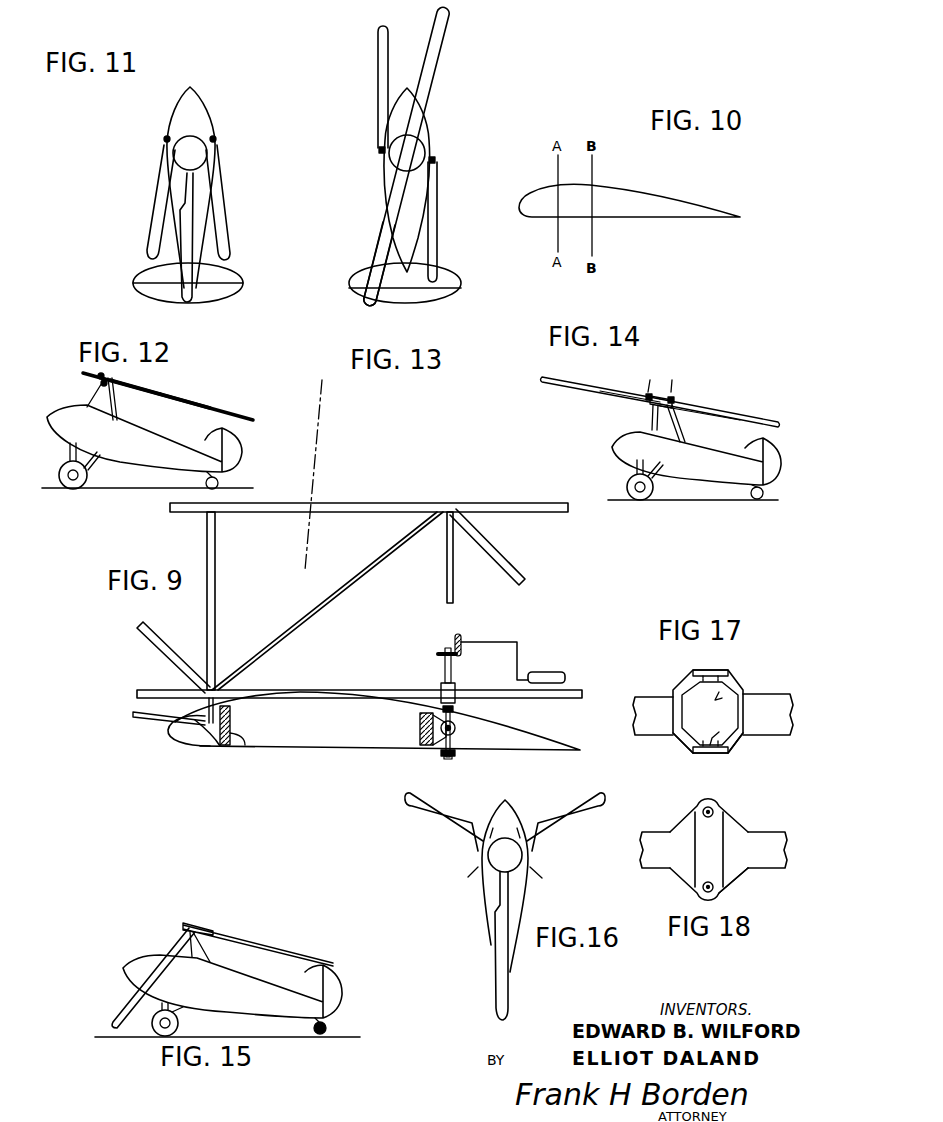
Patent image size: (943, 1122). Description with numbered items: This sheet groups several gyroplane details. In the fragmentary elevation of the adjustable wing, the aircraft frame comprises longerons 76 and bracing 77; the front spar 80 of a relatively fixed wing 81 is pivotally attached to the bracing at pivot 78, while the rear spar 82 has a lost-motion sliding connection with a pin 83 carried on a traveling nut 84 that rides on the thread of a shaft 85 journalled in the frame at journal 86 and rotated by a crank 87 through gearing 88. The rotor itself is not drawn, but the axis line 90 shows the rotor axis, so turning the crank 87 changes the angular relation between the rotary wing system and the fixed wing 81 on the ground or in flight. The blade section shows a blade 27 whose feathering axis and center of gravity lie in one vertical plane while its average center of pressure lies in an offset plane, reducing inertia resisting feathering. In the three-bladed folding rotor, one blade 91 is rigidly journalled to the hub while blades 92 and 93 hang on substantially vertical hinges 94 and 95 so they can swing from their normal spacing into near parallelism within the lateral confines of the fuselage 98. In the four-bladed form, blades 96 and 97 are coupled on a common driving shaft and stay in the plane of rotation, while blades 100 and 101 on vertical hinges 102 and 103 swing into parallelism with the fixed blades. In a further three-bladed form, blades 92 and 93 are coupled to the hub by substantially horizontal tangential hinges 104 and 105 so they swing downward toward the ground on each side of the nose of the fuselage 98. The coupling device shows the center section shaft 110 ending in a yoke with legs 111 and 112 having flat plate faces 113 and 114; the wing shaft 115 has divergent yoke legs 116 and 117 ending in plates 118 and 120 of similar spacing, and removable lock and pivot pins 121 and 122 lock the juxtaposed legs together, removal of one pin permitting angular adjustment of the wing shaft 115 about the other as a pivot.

In FIG. 10, the blade 27 is at (615, 198).
In FIG. 9, the longerons 76 is at (374, 503).
In FIG. 9, the bracing 77 is at (215, 567).
In FIG. 9, the pivot 78 is at (221, 746).
In FIG. 9, the front spar 80 is at (245, 745).
In FIG. 9, the fixed wing 81 is at (183, 735).
In FIG. 9, the rear spar 82 is at (422, 740).
In FIG. 9, the pin 83 is at (456, 731).
In FIG. 9, the traveling nut 84 is at (458, 748).
In FIG. 9, the shaft 85 is at (456, 714).
In FIG. 9, the journal 86 is at (455, 692).
In FIG. 9, the crank 87 is at (545, 673).
In FIG. 9, the gearing 88 is at (455, 640).
In FIG. 9, the axis line 90 is at (316, 465).
In FIG. 11, the blade 91 is at (188, 302).
In FIG. 12, the blade 91 is at (238, 418).
In FIG. 15, the blade 91 is at (280, 950).
In FIG. 11, the blade 92 is at (152, 212).
In FIG. 12, the blade 92 is at (151, 391).
In FIG. 15, the blade 92 is at (130, 1003).
In FIG. 11, the blade 93 is at (224, 215).
In FIG. 12, the blade 93 is at (183, 402).
In FIG. 11, the vertical hinge 94 is at (165, 139).
In FIG. 12, the vertical hinge 94 is at (100, 374).
In FIG. 11, the vertical hinge 95 is at (215, 138).
In FIG. 12, the vertical hinge 95 is at (100, 385).
In FIG. 13, the blade 96 is at (383, 248).
In FIG. 14, the blade 96 is at (718, 408).
In FIG. 13, the blade 97 is at (435, 57).
In FIG. 14, the blade 97 is at (585, 390).
In FIG. 13, the fuselage 98 is at (423, 132).
In FIG. 12, the fuselage 98 is at (75, 428).
In FIG. 14, the fuselage 98 is at (637, 457).
In FIG. 16, the fuselage 98 is at (515, 907).
In FIG. 15, the fuselage 98 is at (235, 982).
In FIG. 13, the blade 100 is at (382, 72).
In FIG. 14, the blade 100 is at (632, 400).
In FIG. 13, the blade 101 is at (429, 232).
In FIG. 14, the blade 101 is at (738, 413).
In FIG. 13, the vertical hinge 102 is at (380, 150).
In FIG. 14, the vertical hinge 102 is at (646, 395).
In FIG. 13, the vertical hinge 103 is at (434, 159).
In FIG. 14, the vertical hinge 103 is at (671, 396).
In FIG. 16, the horizontal hinge 104 is at (478, 856).
In FIG. 16, the horizontal hinge 105 is at (540, 858).
In FIG. 17, the center section shaft 110 is at (770, 705).
In FIG. 18, the center section shaft 110 is at (765, 835).
In FIG. 17, the yoke leg 111 is at (733, 686).
In FIG. 18, the yoke leg 111 is at (735, 876).
In FIG. 17, the yoke leg 112 is at (740, 745).
In FIG. 17, the plate face 113 is at (700, 675).
In FIG. 17, the plate face 114 is at (693, 757).
In FIG. 17, the wing shaft 115 is at (644, 706).
In FIG. 18, the wing shaft 115 is at (657, 842).
In FIG. 17, the yoke leg 116 is at (683, 685).
In FIG. 18, the yoke leg 116 is at (686, 815).
In FIG. 17, the yoke leg 117 is at (680, 745).
In FIG. 17, the plate 118 is at (706, 703).
In FIG. 17, the plate 120 is at (707, 733).
In FIG. 18, the lock and pivot pin 121 is at (713, 810).
In FIG. 18, the lock and pivot pin 122 is at (702, 888).